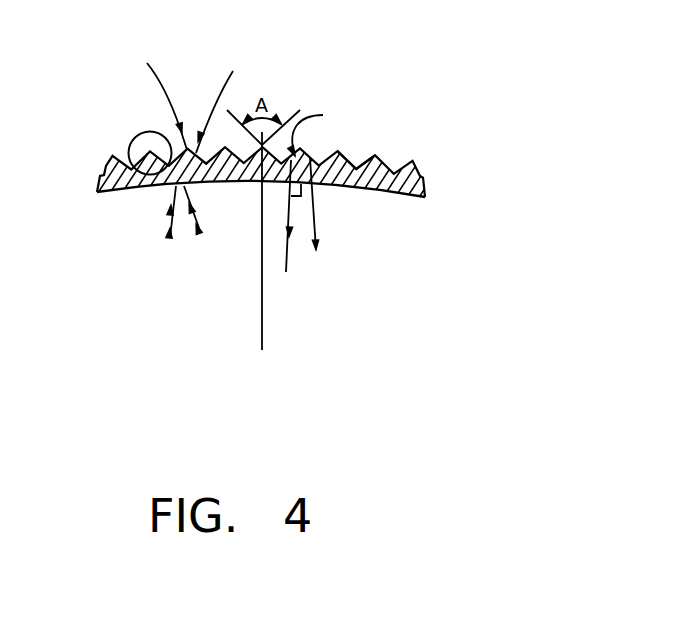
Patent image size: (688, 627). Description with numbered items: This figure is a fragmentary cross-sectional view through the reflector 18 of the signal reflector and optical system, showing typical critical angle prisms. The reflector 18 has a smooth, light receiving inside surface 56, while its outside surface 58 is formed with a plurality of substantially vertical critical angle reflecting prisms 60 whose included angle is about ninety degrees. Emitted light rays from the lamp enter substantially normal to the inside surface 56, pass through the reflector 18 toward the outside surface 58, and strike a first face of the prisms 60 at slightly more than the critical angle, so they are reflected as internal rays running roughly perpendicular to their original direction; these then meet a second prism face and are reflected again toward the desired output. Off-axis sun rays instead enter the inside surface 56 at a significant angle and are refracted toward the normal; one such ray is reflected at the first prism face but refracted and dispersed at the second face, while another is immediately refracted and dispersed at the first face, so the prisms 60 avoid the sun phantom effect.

The reflector 18 is at (418, 173).
The inside surface 56 is at (112, 195).
The outside surface 58 is at (359, 157).
The critical angle reflecting prisms 60 is at (131, 134).